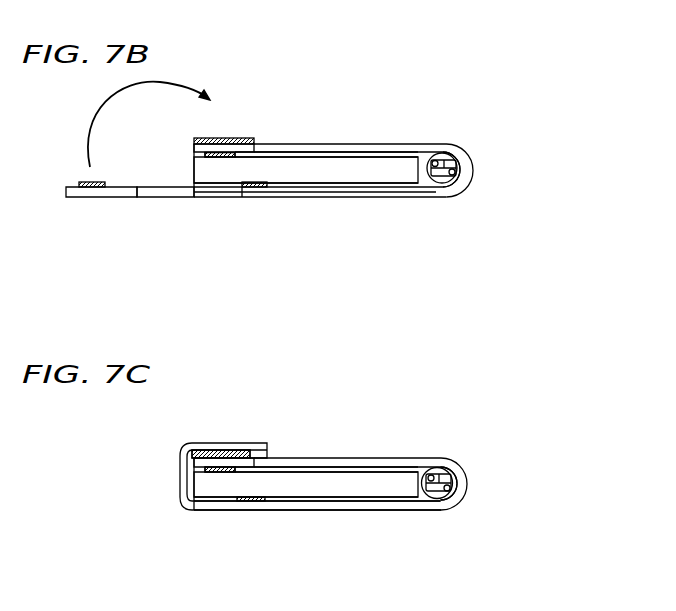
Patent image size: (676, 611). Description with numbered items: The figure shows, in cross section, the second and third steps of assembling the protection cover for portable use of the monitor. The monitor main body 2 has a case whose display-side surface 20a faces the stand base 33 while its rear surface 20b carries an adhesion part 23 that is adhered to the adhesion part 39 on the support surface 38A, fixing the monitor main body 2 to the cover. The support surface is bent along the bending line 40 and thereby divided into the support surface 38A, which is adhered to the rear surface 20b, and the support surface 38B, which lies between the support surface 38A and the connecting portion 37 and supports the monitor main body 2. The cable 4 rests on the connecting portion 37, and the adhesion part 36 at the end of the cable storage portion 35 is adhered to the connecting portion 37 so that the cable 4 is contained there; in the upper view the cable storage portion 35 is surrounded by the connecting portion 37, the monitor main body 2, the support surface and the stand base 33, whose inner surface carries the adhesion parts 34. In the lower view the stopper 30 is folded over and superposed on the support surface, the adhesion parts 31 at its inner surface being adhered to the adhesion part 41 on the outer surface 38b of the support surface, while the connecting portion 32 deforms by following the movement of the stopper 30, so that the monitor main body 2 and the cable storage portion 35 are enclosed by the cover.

In FIG. 7B, the monitor main body 2 is at (193, 167).
In FIG. 7C, the monitor main body 2 is at (306, 484).
In FIG. 7B, the cable 4 is at (458, 168).
In FIG. 7C, the cable 4 is at (457, 483).
In FIG. 7B, the surface 20a is at (300, 192).
In FIG. 7C, the surface 20a is at (390, 501).
In FIG. 7B, the rear surface 20b is at (290, 157).
In FIG. 7C, the rear surface 20b is at (397, 470).
In FIG. 7B, the adhesion part 23 is at (203, 155).
In FIG. 7C, the adhesion part 23 is at (203, 470).
In FIG. 7B, the stopper 30 is at (100, 198).
In FIG. 7C, the stopper 30 is at (233, 442).
In FIG. 7B, the adhesion parts 31 is at (78, 181).
In FIG. 7C, the adhesion parts 31 is at (192, 455).
In FIG. 7B, the connecting portion 32 is at (163, 198).
In FIG. 7C, the connecting portion 32 is at (182, 498).
In FIG. 7B, the stand base 33 is at (327, 198).
In FIG. 7C, the stand base 33 is at (338, 511).
In FIG. 7B, the adhesion parts 34 is at (244, 188).
In FIG. 7C, the adhesion parts 34 is at (247, 502).
In FIG. 7B, the cable storage portion 35 is at (433, 153).
In FIG. 7C, the cable storage portion 35 is at (432, 466).
In FIG. 7B, the adhesion part 36 is at (464, 156).
In FIG. 7C, the adhesion part 36 is at (466, 468).
In FIG. 7B, the connecting portion 37 is at (468, 183).
In FIG. 7C, the connecting portion 37 is at (466, 498).
In FIG. 7B, the support surface 38A is at (192, 145).
In FIG. 7C, the support surface 38A is at (186, 460).
In FIG. 7B, the support surface 38B is at (382, 144).
In FIG. 7C, the support surface 38B is at (352, 458).
In FIG. 7B, the outer surface 38b is at (330, 144).
In FIG. 7B, the adhesion part 39 is at (220, 155).
In FIG. 7C, the adhesion part 39 is at (220, 469).
In FIG. 7B, the bending line 40 is at (258, 144).
In FIG. 7C, the bending line 40 is at (258, 458).
In FIG. 7B, the adhesion part 41 is at (213, 138).
In FIG. 7C, the adhesion part 41 is at (221, 454).